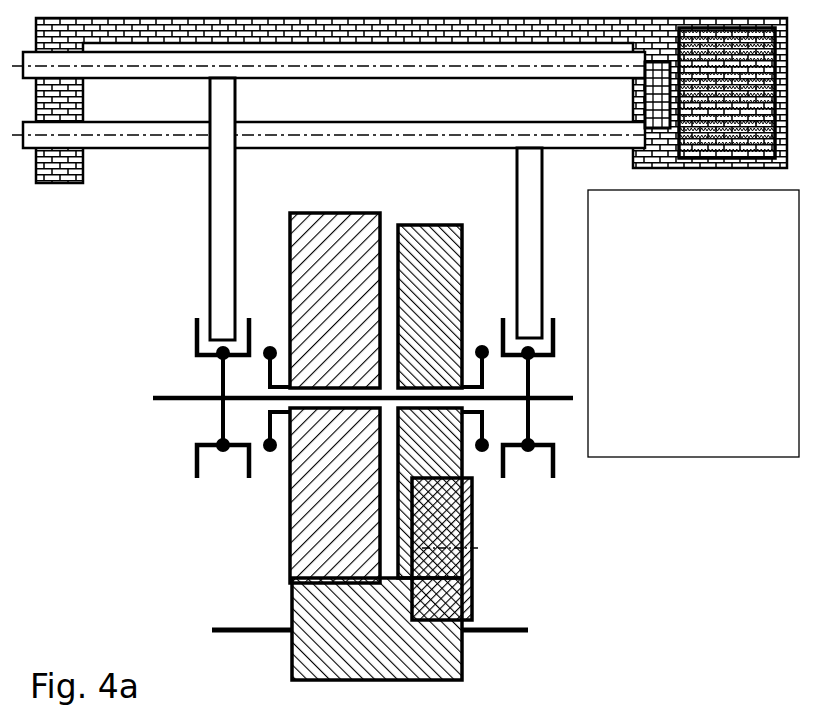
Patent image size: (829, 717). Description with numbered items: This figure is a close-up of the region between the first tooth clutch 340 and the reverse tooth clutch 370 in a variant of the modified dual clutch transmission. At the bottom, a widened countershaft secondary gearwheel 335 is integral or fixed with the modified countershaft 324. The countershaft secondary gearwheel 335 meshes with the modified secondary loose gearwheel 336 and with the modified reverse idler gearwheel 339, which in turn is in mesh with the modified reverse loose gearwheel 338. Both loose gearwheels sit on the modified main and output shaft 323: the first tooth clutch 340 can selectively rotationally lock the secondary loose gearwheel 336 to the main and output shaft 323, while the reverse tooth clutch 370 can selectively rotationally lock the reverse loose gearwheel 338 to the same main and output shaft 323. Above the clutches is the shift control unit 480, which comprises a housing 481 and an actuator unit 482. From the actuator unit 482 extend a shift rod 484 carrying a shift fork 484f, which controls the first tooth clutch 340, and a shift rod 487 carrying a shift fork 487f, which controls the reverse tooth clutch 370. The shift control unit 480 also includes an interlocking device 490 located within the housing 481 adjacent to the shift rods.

The main and output shaft 323 is at (151, 396).
The countershaft 324 is at (211, 630).
The countershaft secondary gearwheel 335 is at (291, 665).
The secondary loose gearwheel 336 is at (289, 564).
The reverse loose gearwheel 338 is at (465, 467).
The reverse idler gearwheel 339 is at (475, 595).
The first tooth clutch 340 is at (247, 491).
The reverse tooth clutch 370 is at (567, 480).
The shift control unit 480 is at (654, 451).
The housing 481 is at (694, 172).
The actuator unit 482 is at (738, 113).
The shift rod 484 is at (589, 80).
The shift fork 484f is at (544, 254).
The shift rod 487 is at (659, 114).
The shift fork 487f is at (238, 181).
The interlocking device 490 is at (662, 151).